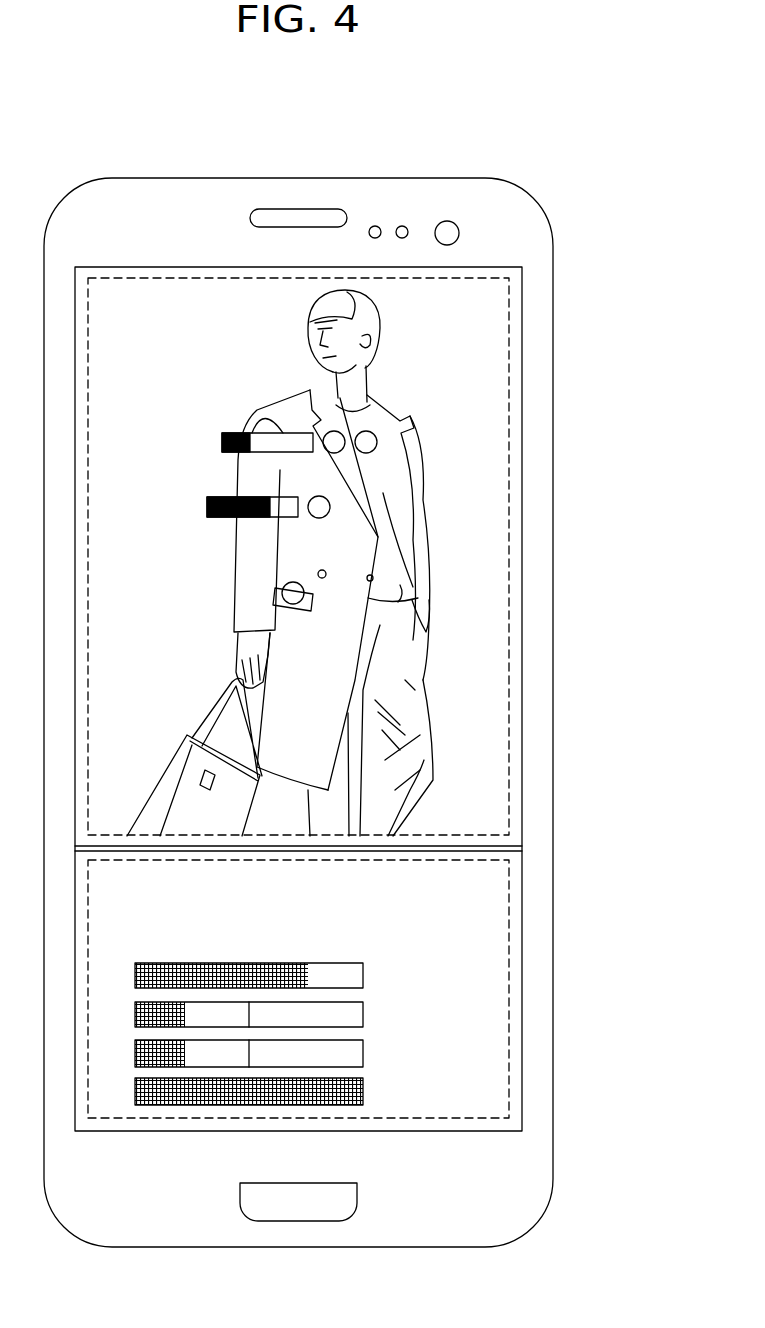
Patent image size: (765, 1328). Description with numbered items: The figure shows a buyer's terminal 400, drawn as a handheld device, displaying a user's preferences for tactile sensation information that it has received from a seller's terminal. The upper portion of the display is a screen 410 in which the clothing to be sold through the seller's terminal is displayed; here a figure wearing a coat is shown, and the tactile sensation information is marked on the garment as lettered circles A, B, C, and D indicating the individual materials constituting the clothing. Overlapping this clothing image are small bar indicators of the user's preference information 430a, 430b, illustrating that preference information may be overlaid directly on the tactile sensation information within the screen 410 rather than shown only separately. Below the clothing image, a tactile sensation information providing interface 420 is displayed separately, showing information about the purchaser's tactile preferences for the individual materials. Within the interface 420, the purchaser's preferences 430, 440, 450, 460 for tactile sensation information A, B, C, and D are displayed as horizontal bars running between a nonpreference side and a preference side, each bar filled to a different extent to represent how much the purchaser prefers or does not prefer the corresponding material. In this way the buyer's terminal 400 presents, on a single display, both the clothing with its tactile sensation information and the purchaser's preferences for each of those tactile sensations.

The electronic device 400 is at (343, 178).
The screen 410 is at (509, 558).
The tactile sensation information providing interface 420 is at (509, 1004).
The purchaser's preference 430 is at (368, 975).
The user's preference information 430a is at (205, 507).
The tactile sensation indicator B 430b is at (220, 443).
The purchaser's preference 440 is at (368, 1014).
The purchaser's preference 450 is at (368, 1052).
The purchaser's preference 460 is at (368, 1091).